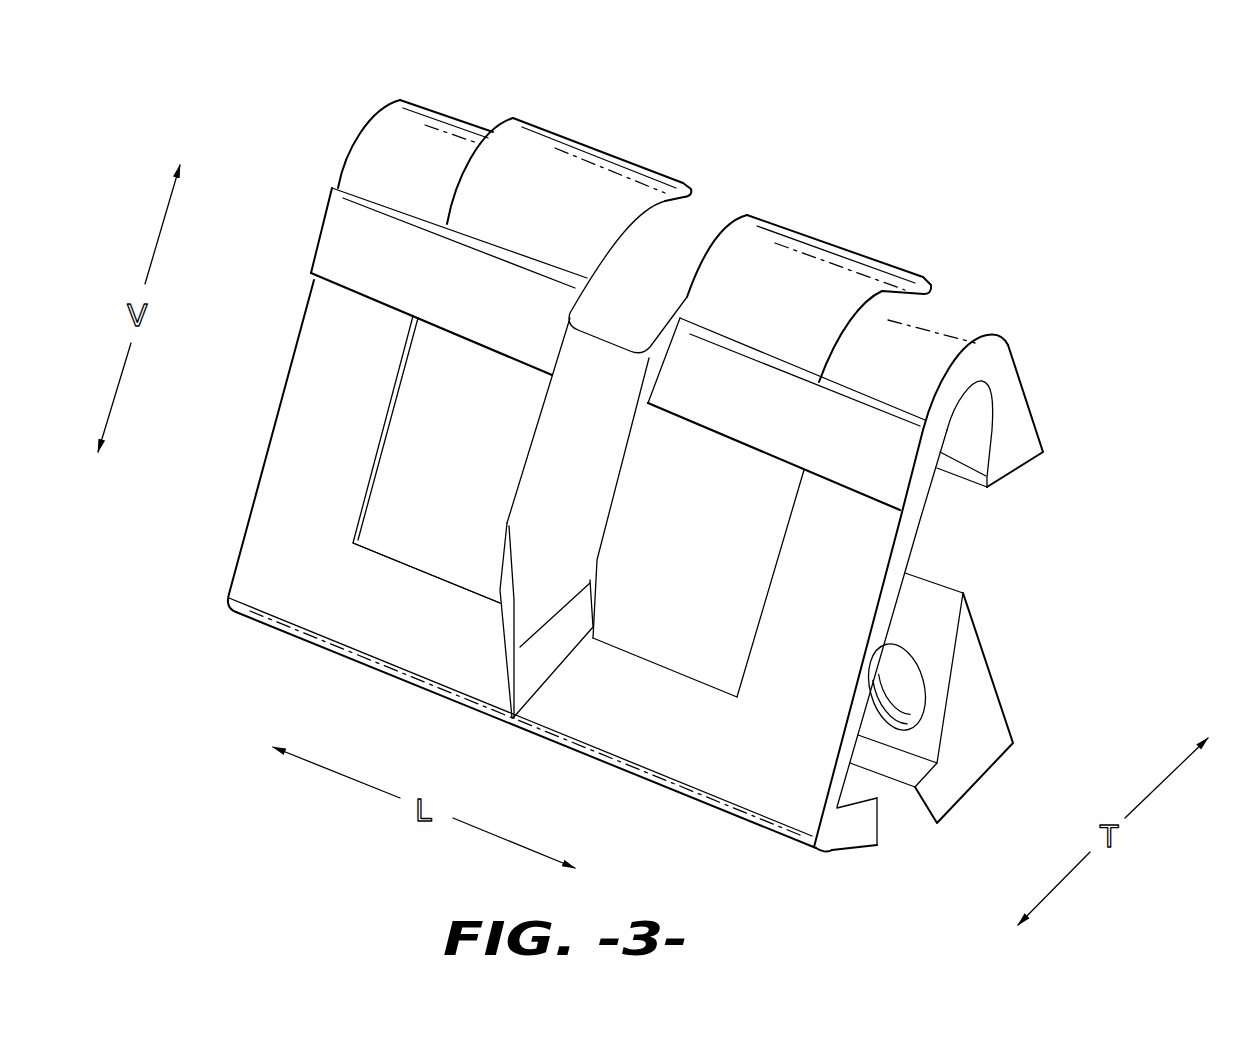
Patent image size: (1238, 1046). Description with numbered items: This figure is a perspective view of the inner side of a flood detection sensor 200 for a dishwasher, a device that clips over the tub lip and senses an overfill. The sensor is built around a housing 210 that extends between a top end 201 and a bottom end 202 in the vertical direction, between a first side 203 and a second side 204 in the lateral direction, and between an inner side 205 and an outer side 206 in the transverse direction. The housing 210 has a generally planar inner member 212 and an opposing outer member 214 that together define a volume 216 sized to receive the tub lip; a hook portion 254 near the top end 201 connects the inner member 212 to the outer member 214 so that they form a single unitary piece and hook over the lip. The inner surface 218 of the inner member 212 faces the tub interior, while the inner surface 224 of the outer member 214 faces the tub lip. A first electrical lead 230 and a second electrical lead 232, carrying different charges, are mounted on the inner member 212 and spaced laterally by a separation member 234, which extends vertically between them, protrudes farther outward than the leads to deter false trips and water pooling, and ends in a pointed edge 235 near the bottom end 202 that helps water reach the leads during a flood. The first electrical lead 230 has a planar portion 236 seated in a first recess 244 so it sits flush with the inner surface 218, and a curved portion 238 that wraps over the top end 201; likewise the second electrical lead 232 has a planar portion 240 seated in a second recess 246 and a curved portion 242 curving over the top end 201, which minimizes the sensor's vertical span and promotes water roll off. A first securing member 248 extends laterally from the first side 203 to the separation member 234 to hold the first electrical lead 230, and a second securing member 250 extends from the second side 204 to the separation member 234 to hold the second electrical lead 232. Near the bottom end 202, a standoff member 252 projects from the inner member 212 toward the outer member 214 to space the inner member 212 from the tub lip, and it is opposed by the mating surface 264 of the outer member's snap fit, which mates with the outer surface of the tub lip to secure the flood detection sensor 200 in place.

The flood detection sensor 200 is at (1066, 204).
The top end 201 is at (345, 122).
The bottom end 202 is at (199, 603).
The first side 203 is at (215, 620).
The second side 204 is at (807, 860).
The inner side 205 is at (837, 863).
The outer side 206 is at (1027, 768).
The housing 210 is at (297, 441).
The inner member 212 is at (274, 349).
The outer member 214 is at (1040, 425).
The volume 216 is at (928, 527).
The inner surface 218 is at (283, 562).
The inner surface 224 is at (963, 470).
The first electrical lead 230 is at (566, 168).
The second electrical lead 232 is at (783, 250).
The separation member 234 is at (540, 487).
The pointed edge 235 is at (553, 688).
The planar portion 236 is at (417, 462).
The curved portion 238 is at (505, 125).
The planar portion 240 is at (747, 538).
The curved portion 242 is at (887, 250).
The first recess 244 is at (385, 398).
The second recess 246 is at (760, 642).
The first securing member 248 is at (481, 301).
The second securing member 250 is at (786, 423).
The standoff member 252 is at (883, 833).
The hook portion 254 is at (1020, 337).
The mating surface 264 is at (907, 800).